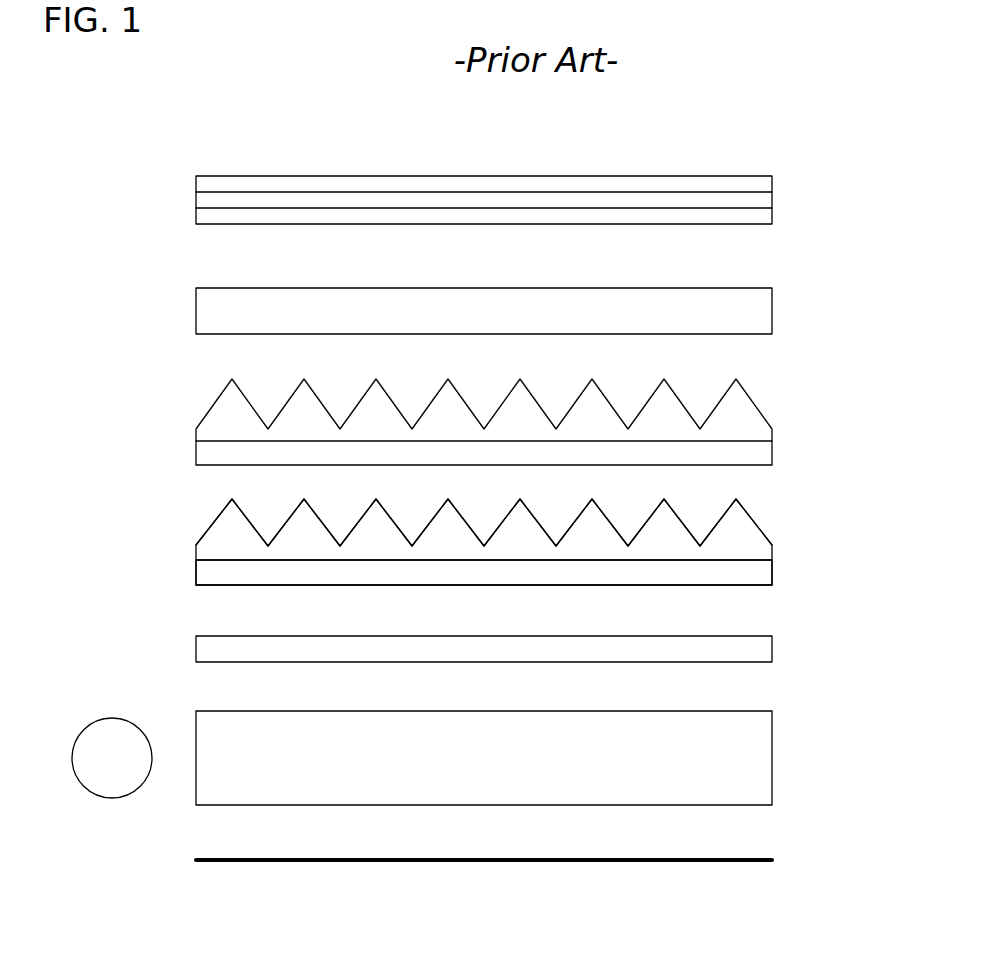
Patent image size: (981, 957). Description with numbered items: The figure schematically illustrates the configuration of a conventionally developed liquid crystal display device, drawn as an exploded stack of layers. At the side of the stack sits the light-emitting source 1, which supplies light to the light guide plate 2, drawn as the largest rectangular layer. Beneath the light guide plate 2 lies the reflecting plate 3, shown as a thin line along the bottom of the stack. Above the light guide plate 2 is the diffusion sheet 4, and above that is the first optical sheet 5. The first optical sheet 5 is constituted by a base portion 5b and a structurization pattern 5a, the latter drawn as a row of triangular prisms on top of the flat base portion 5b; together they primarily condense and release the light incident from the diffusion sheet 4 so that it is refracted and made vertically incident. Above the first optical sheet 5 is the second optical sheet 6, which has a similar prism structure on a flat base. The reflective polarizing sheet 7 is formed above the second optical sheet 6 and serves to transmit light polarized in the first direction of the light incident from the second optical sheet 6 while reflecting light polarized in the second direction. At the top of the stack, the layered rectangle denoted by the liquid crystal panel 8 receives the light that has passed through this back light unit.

The light-emitting source 1 is at (110, 798).
The light guide plate 2 is at (772, 755).
The reflecting plate 3 is at (772, 858).
The diffusion sheet 4 is at (772, 648).
The first optical sheet 5 is at (497, 542).
The structurization pattern 5a is at (225, 538).
The base portion 5b is at (210, 568).
The second optical sheet 6 is at (772, 441).
The reflective polarizing sheet 7 is at (772, 310).
The liquid crystal panel 8 is at (772, 200).